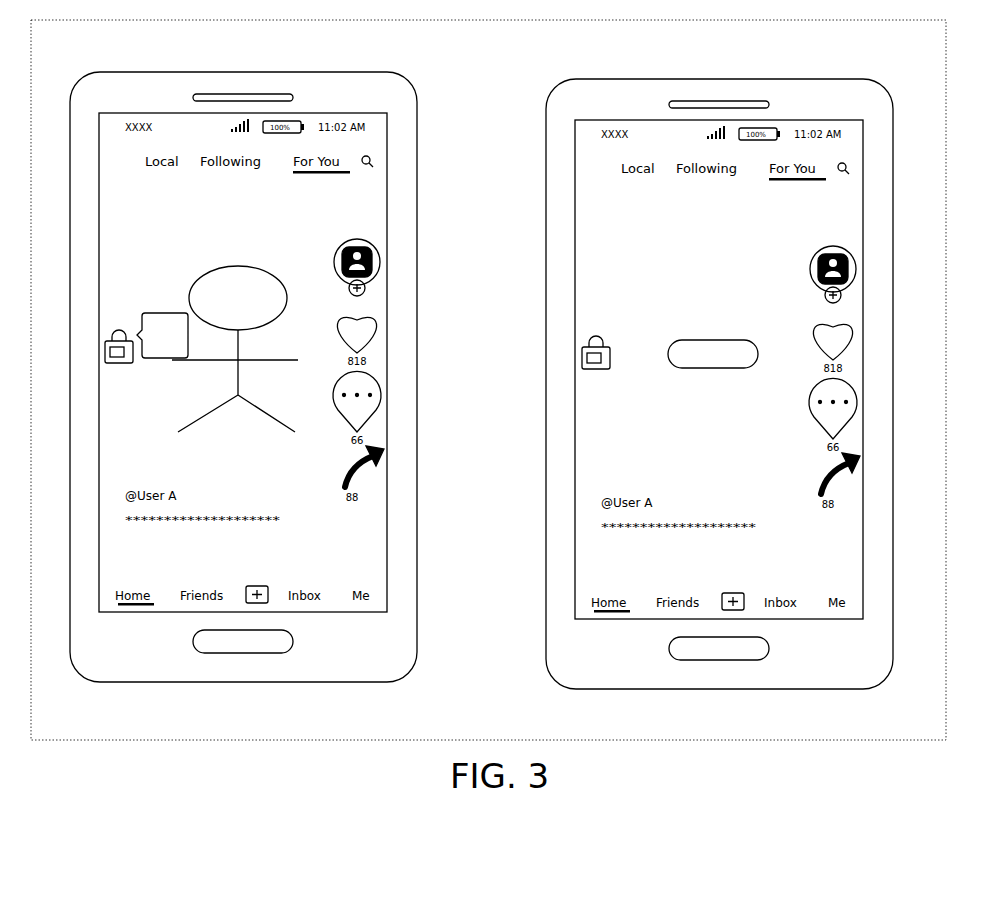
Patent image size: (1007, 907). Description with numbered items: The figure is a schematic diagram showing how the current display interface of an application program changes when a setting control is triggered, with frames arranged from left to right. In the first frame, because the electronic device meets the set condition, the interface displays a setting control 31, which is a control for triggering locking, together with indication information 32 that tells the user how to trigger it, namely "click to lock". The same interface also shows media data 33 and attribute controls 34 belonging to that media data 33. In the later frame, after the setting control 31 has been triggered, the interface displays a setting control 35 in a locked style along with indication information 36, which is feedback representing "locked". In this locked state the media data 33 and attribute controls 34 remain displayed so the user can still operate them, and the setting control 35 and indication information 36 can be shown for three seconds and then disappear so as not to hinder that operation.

The setting control 31 is at (99, 348).
The indication information 32 is at (136, 318).
The media data 33 is at (190, 282).
The attribute controls 34 is at (386, 282).
The setting control 35 is at (576, 355).
The indication information 36 is at (674, 340).